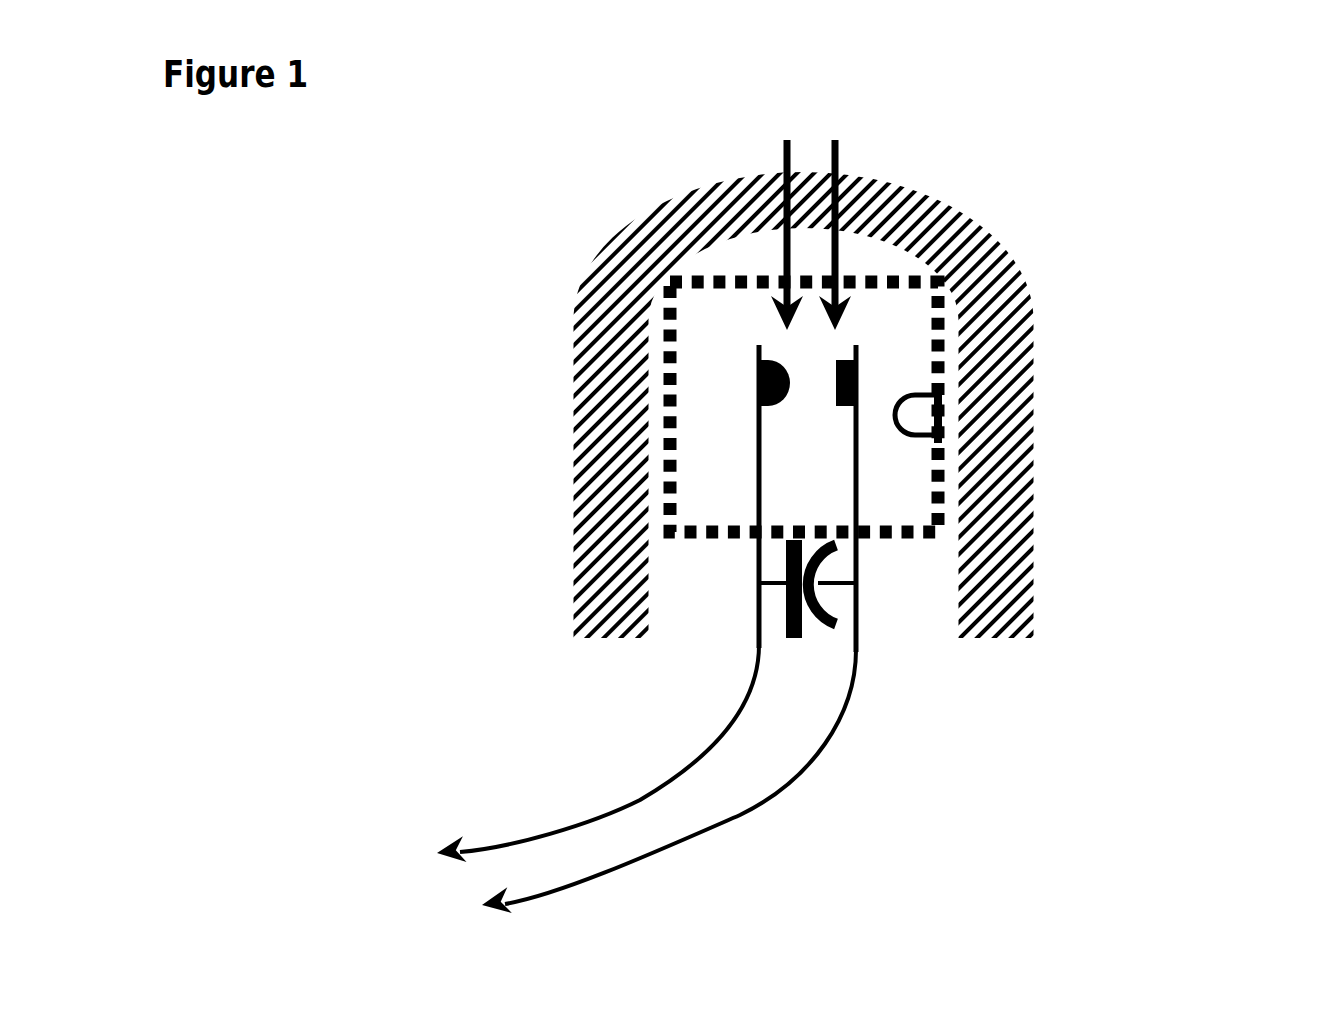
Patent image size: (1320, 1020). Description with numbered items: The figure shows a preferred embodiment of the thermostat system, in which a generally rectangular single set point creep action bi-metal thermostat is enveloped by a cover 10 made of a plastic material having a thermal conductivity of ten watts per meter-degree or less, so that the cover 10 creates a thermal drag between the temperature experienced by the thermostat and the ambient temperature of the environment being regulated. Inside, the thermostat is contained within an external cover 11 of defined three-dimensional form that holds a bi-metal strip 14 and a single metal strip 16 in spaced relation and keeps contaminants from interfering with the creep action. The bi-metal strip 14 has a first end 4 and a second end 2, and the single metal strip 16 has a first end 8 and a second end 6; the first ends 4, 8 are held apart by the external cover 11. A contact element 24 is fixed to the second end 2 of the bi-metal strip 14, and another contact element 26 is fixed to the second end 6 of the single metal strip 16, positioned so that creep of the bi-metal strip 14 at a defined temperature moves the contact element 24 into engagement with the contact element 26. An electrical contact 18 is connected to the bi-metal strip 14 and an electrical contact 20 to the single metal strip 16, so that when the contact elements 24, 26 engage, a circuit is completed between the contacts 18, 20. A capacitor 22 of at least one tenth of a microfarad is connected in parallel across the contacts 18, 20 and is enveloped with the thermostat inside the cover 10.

The second end of the bi-metal strip 2 is at (736, 354).
The first end of the bi-metal strip 4 is at (735, 553).
The second end of the single metal strip 6 is at (880, 352).
The first end of the single metal strip 8 is at (879, 553).
The cover 10 is at (555, 278).
The external cover 11 is at (650, 333).
The bi-metal strip 14 is at (735, 487).
The single metal strip 16 is at (879, 487).
The electrical contact 18 is at (702, 713).
The electrical contact 20 is at (870, 708).
The capacitor 22 is at (805, 668).
The contact element 24 is at (786, 208).
The contact element 26 is at (837, 208).